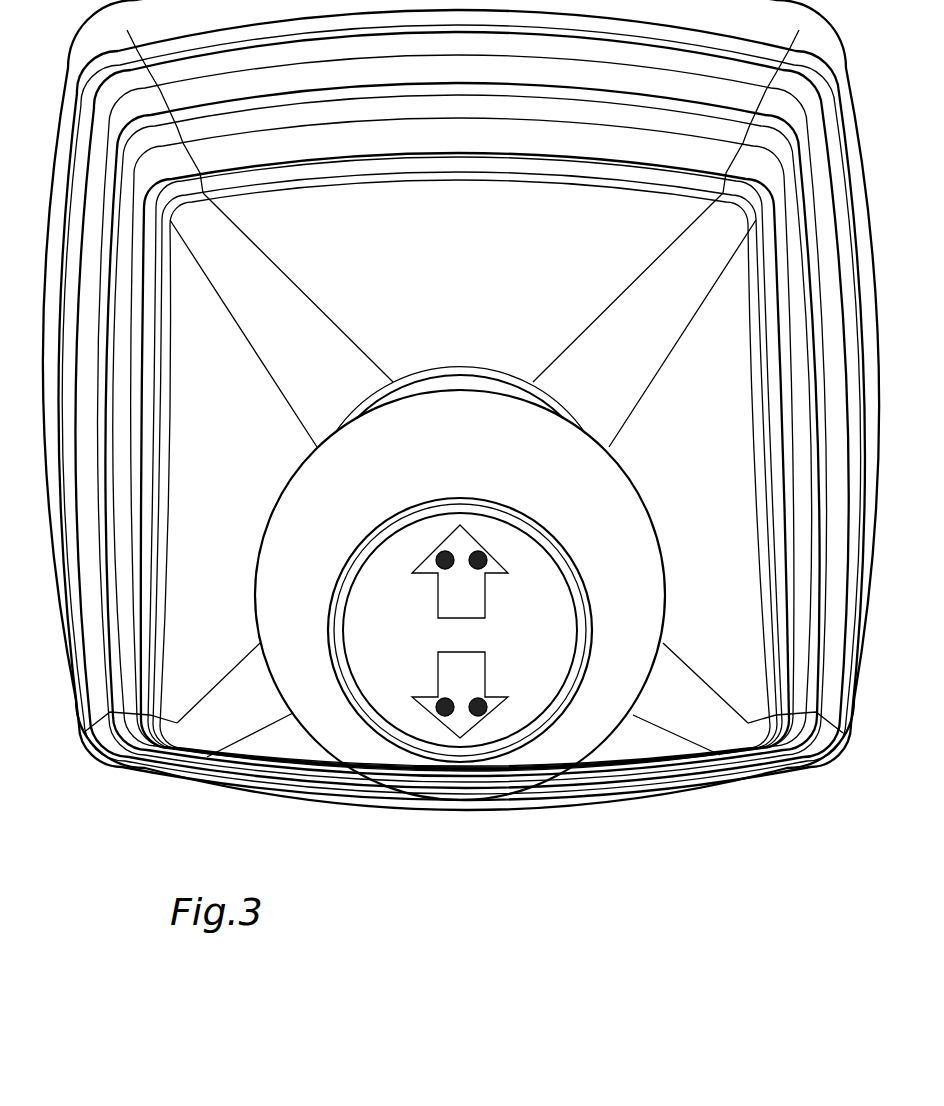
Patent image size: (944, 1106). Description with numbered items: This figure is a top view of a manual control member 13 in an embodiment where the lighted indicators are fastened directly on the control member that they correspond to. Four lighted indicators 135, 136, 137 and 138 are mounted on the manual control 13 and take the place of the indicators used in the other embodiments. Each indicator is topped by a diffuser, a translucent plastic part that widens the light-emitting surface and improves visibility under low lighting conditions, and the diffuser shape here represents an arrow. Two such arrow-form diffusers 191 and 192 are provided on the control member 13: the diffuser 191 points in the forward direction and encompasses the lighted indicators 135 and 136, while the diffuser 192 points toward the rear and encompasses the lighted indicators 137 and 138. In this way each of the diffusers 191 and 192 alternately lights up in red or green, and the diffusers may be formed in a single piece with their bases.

The manual control member 13 is at (297, 596).
The lighted indicator 135 is at (438, 556).
The lighted indicator 136 is at (483, 550).
The lighted indicator 137 is at (432, 716).
The lighted indicator 138 is at (487, 716).
The diffuser 191 is at (473, 603).
The diffuser 192 is at (473, 663).